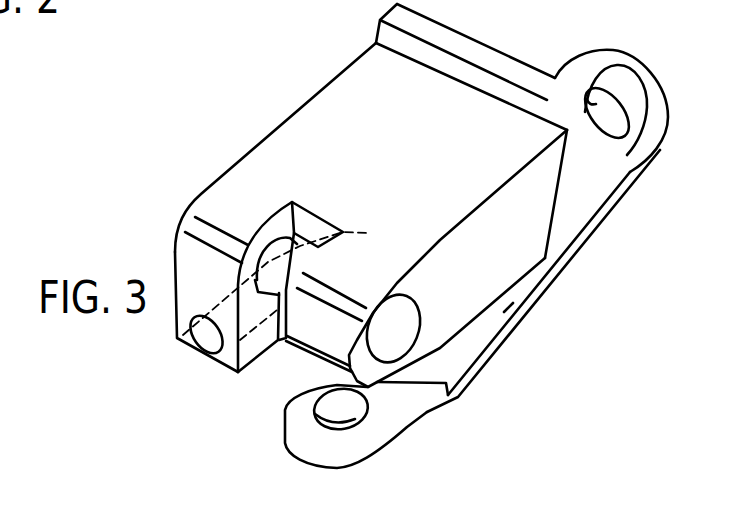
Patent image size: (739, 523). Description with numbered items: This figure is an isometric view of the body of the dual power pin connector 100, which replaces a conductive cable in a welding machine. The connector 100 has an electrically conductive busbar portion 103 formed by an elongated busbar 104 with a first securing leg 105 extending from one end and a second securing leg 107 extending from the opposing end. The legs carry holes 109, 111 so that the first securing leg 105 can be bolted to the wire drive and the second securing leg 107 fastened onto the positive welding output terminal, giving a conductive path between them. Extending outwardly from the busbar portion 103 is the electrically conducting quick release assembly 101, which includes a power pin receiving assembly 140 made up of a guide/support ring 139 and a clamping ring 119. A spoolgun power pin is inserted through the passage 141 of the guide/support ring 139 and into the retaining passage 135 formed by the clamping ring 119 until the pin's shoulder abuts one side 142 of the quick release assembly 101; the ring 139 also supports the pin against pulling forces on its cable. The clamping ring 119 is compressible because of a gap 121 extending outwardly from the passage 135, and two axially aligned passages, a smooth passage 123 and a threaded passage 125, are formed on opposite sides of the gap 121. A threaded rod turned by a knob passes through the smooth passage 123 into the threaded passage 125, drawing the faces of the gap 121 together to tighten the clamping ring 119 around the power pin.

The dual power pin connector 100 is at (281, 98).
The quick release assembly 101 is at (249, 145).
The busbar portion 103 is at (571, 281).
The busbar 104 is at (507, 306).
The first securing leg 105 is at (553, 84).
The second securing leg 107 is at (357, 453).
The hole 109 is at (597, 72).
The hole 111 is at (316, 400).
The clamping ring 119 is at (185, 267).
The gap 121 is at (279, 352).
The smooth passage 123 is at (192, 347).
The threaded passage 125 is at (298, 277).
The retaining passage 135 is at (300, 251).
The guide/support ring 139 is at (422, 410).
The power pin receiving assembly 140 is at (172, 211).
The passage 141 is at (385, 330).
The side 142 is at (541, 231).